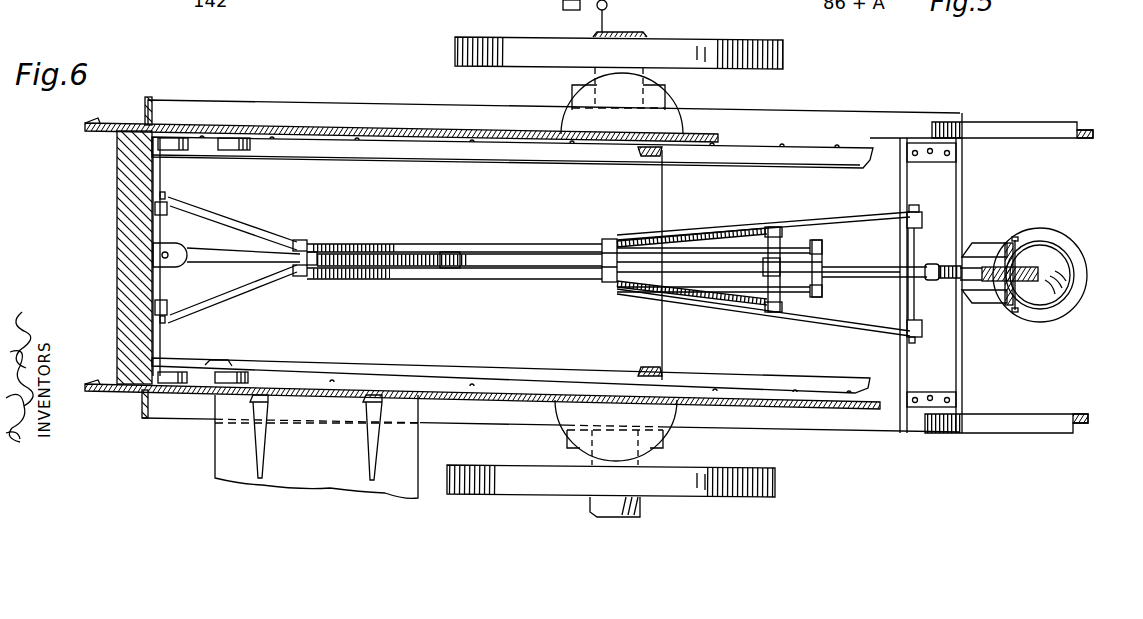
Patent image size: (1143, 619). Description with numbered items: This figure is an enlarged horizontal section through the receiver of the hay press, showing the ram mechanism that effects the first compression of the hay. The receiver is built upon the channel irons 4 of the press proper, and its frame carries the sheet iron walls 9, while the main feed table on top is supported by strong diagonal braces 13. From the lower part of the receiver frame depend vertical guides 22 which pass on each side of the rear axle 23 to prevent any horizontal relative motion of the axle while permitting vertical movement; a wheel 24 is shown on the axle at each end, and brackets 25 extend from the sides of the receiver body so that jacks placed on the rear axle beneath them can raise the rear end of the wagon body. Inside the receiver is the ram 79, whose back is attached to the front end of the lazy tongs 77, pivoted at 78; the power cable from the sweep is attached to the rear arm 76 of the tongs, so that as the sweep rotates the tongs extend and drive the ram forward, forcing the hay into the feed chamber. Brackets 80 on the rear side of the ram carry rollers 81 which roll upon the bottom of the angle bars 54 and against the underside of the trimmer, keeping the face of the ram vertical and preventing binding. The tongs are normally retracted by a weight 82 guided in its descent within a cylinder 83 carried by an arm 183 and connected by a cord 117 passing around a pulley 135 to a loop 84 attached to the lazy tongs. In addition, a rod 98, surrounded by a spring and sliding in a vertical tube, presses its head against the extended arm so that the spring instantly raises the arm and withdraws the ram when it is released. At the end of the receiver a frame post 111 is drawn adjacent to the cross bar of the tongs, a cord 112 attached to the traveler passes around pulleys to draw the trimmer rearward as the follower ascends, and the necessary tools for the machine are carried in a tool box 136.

The channel irons 4 is at (131, 391).
The sheet iron walls 9 is at (337, 130).
The diagonal braces 13 is at (1012, 128).
The vertical guides 22 is at (663, 93).
The rear axle 23 is at (597, 72).
The drive wheel 24 is at (722, 57).
The brackets 25 is at (654, 441).
The angle bars 54 is at (475, 158).
The rear arm of lazy tongs 76 is at (928, 280).
The lazy tongs 77 is at (538, 247).
The pivot 78 is at (912, 340).
The ram 79 is at (116, 236).
The brackets 80 is at (198, 151).
The rollers 81 is at (250, 148).
The weight 82 is at (1035, 300).
The cylinder 83 is at (1038, 247).
The loop 84 is at (785, 247).
The rod 98 is at (932, 264).
The frame post 111 is at (956, 186).
The cord 112 is at (605, 25).
The cord 117 is at (856, 267).
The pulley 135 is at (1003, 282).
The tool box 136 is at (316, 446).
The arm 183 is at (987, 250).